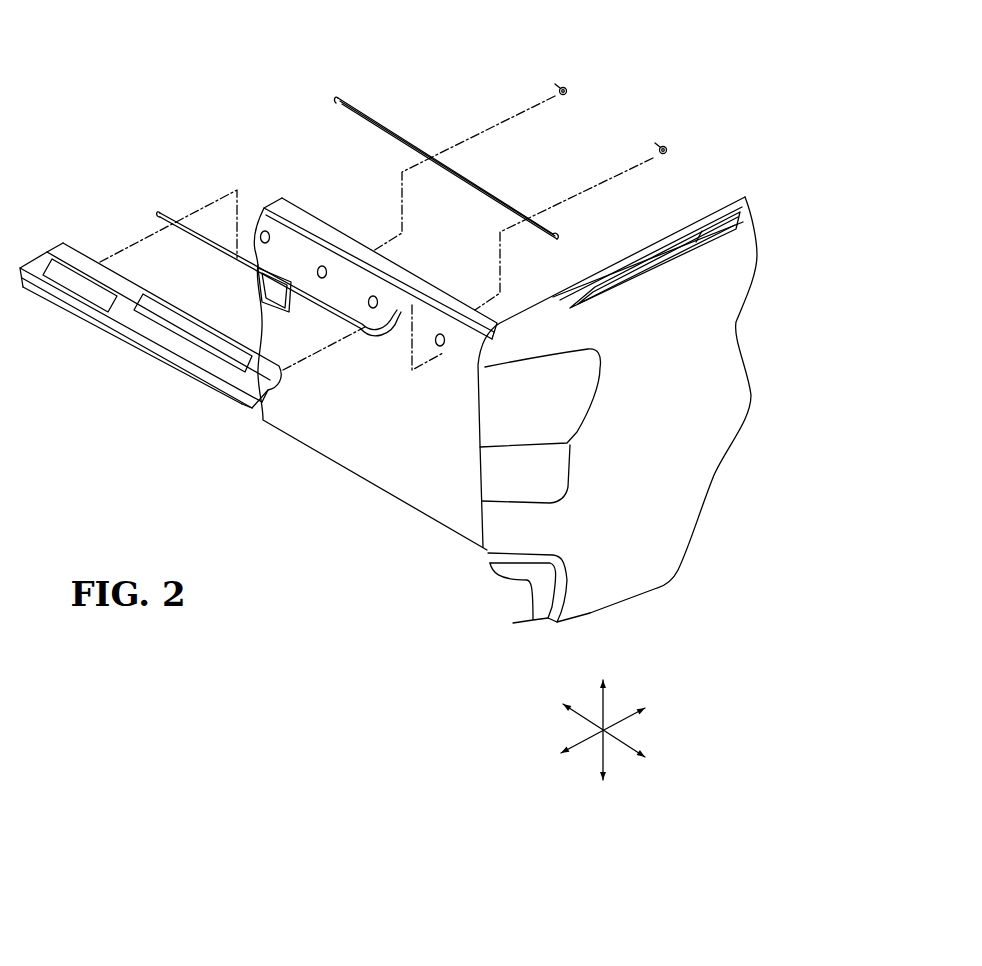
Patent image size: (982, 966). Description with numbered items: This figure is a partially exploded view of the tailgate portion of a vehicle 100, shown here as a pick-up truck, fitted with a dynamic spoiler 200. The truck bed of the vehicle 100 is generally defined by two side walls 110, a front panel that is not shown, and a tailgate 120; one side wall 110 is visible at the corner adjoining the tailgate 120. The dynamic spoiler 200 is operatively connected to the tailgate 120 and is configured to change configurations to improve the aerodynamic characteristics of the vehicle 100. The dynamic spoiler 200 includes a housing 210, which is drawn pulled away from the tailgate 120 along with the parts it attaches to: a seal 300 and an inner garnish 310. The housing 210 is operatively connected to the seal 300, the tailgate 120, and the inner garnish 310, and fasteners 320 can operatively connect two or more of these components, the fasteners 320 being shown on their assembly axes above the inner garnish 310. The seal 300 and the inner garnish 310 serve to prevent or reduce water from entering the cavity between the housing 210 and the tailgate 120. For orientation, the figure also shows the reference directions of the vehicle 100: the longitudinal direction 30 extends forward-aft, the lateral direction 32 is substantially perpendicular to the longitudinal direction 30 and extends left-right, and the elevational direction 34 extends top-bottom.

The vehicle 100 is at (641, 392).
The side wall 110 is at (660, 437).
The tailgate 120 is at (417, 430).
The dynamic spoiler 200 is at (150, 360).
The housing 210 is at (103, 322).
The seal 300 is at (192, 220).
The inner garnish 310 is at (360, 108).
The fasteners 320 is at (556, 85).
The longitudinal direction 30 is at (628, 716).
The lateral direction 32 is at (625, 747).
The elevational direction 34 is at (595, 757).